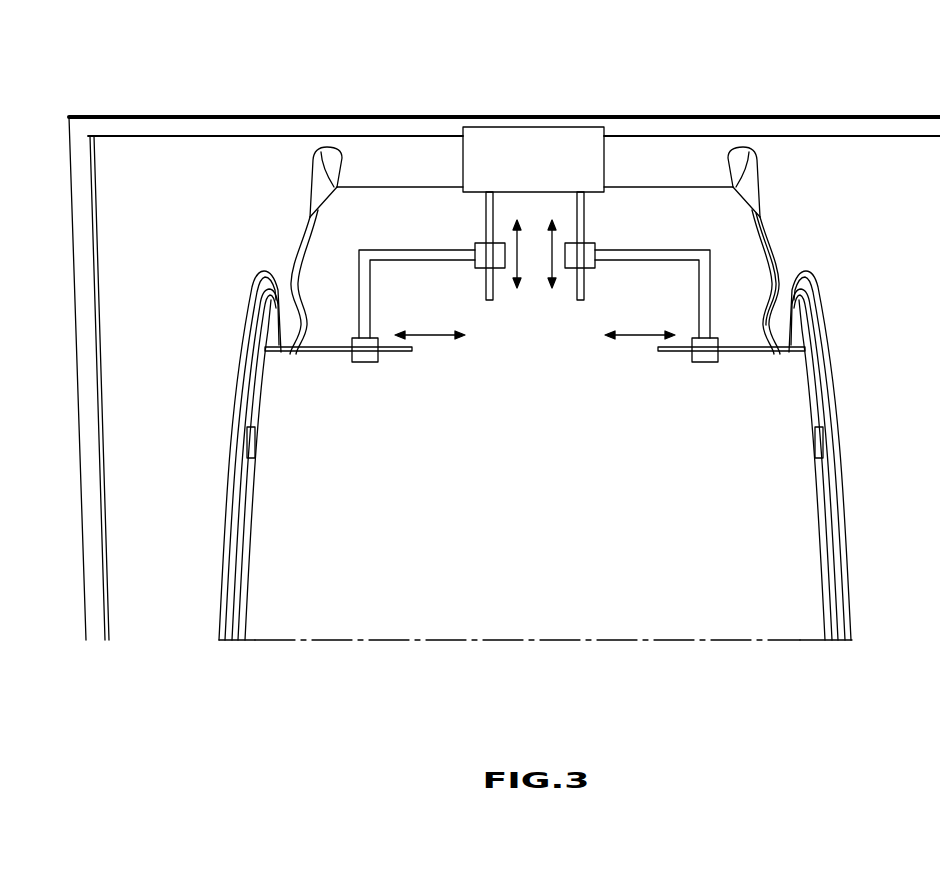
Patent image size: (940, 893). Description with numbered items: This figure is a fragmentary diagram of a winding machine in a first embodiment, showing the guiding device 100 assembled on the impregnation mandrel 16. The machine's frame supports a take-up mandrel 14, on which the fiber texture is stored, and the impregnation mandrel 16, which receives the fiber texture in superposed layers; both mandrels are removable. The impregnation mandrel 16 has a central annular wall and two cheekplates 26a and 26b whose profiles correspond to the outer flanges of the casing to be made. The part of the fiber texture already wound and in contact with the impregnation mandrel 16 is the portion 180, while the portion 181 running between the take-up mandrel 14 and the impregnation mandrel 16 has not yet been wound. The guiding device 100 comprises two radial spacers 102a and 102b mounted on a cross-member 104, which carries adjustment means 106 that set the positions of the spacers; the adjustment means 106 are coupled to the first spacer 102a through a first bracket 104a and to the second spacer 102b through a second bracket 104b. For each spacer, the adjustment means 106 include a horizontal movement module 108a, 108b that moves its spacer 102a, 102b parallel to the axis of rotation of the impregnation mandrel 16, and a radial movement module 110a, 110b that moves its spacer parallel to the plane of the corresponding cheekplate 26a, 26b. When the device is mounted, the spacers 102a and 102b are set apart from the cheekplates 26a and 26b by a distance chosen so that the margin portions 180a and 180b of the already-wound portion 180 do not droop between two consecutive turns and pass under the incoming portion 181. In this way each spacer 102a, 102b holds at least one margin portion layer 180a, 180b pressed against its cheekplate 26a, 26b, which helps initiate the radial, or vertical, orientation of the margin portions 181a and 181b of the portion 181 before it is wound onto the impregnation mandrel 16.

The take-up mandrel 14 is at (313, 167).
The impregnation mandrel 16 is at (855, 560).
The cheekplate 26a is at (260, 273).
The cheekplate 26b is at (812, 273).
The guiding device 100 is at (527, 112).
The radial spacer 102a is at (278, 308).
The radial spacer 102b is at (790, 311).
The cross-member 104 is at (380, 200).
The first bracket 104a is at (380, 256).
The second bracket 104b is at (687, 256).
The adjustment means 106 is at (442, 172).
The horizontal movement module 108a is at (365, 360).
The horizontal movement module 108b is at (705, 360).
The radial movement module 110a is at (482, 250).
The radial movement module 110b is at (588, 250).
The already-wound portion of the fiber texture 180 is at (546, 550).
The margin portion 180a is at (280, 308).
The margin portion 180b is at (788, 308).
The not-yet-wound portion of the fiber texture 181 is at (730, 240).
The margin portion 181a is at (273, 363).
The margin portion 181b is at (792, 363).